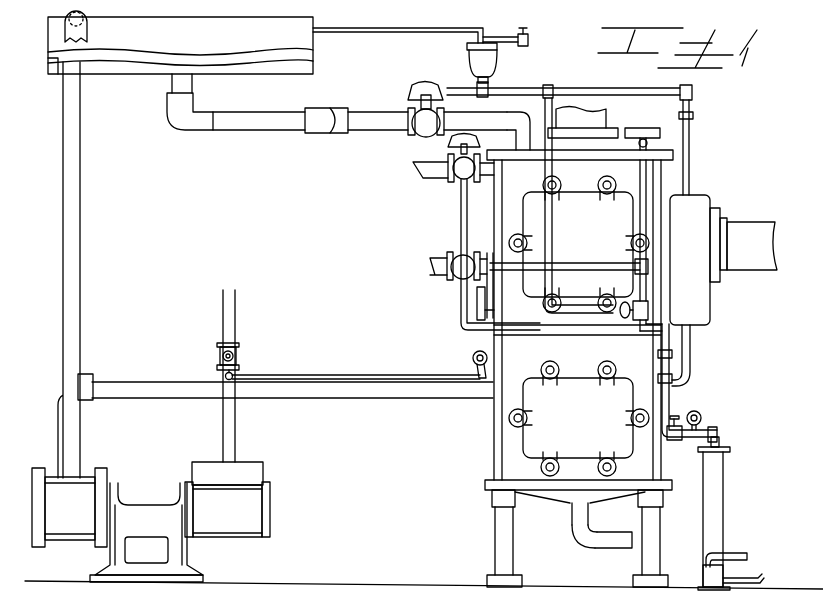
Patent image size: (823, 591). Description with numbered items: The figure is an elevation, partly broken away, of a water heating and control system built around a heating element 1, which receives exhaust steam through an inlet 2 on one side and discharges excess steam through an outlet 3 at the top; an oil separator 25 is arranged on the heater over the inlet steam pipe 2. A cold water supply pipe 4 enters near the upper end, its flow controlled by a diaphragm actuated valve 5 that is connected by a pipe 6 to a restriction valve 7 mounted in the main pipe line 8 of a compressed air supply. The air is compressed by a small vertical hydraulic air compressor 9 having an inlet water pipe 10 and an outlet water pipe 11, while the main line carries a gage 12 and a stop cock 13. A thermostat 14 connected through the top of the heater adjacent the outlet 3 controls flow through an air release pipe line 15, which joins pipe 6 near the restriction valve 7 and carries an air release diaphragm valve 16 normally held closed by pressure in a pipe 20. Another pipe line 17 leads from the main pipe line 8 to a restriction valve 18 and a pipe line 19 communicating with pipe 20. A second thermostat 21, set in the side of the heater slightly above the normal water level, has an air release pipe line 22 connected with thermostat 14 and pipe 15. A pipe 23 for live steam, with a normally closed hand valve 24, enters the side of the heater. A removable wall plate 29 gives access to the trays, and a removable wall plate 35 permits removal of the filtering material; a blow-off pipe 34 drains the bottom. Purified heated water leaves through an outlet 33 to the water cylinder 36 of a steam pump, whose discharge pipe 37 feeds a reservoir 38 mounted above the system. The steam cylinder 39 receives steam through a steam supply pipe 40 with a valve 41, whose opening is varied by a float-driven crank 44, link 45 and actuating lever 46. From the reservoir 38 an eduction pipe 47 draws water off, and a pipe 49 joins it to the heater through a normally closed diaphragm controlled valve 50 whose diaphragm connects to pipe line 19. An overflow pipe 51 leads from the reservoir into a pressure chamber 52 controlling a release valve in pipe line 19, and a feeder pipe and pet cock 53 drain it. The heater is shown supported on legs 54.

The heating element 1 is at (579, 368).
The inlet 2 is at (752, 246).
The outlet 3 is at (605, 110).
The cold water supply pipe 4 is at (413, 170).
The diaphragm actuated valve 5 is at (458, 178).
The pipe 6 is at (500, 254).
The restriction valve 7 is at (663, 340).
The main pipe line 8 is at (667, 395).
The hydraulic air compressor 9 is at (713, 505).
The inlet water pipe 10 is at (742, 553).
The outlet water pipe 11 is at (758, 583).
The gage 12 is at (700, 418).
The stop cock 13 is at (677, 442).
The thermostat 14 is at (653, 132).
The air release pipe line 15 is at (643, 215).
The air release diaphragm valve 16 is at (648, 307).
The pipe line 17 is at (697, 167).
The restriction valve 18 is at (692, 98).
The pipe line 19 is at (621, 87).
The pipe 20 is at (557, 218).
The thermostat 21 is at (477, 307).
The air release pipe line 22 is at (582, 260).
The pipe 23 is at (431, 267).
The hand valve 24 is at (460, 252).
The oil separator 25 is at (702, 245).
The removable wall plate 29 is at (579, 244).
The outlet 33 is at (343, 388).
The blow-off pipe 34 is at (618, 542).
The removable wall plate 35 is at (579, 418).
The water cylinder 36 is at (69, 507).
The discharge pipe 37 is at (72, 360).
The reservoir 38 is at (153, 40).
The steam cylinder 39 is at (227, 499).
The steam supply pipe 40 is at (232, 440).
The valve 41 is at (238, 353).
The crank 44 is at (473, 363).
The link 45 is at (381, 378).
The actuating lever 46 is at (225, 375).
The eduction pipe 47 is at (265, 122).
The pipe 49 is at (368, 117).
The diaphragm controlled valve 50 is at (427, 122).
The overflow pipe 51 is at (433, 32).
The pressure chamber 52 is at (497, 67).
The pet cock 53 is at (528, 38).
The legs 54 is at (568, 524).